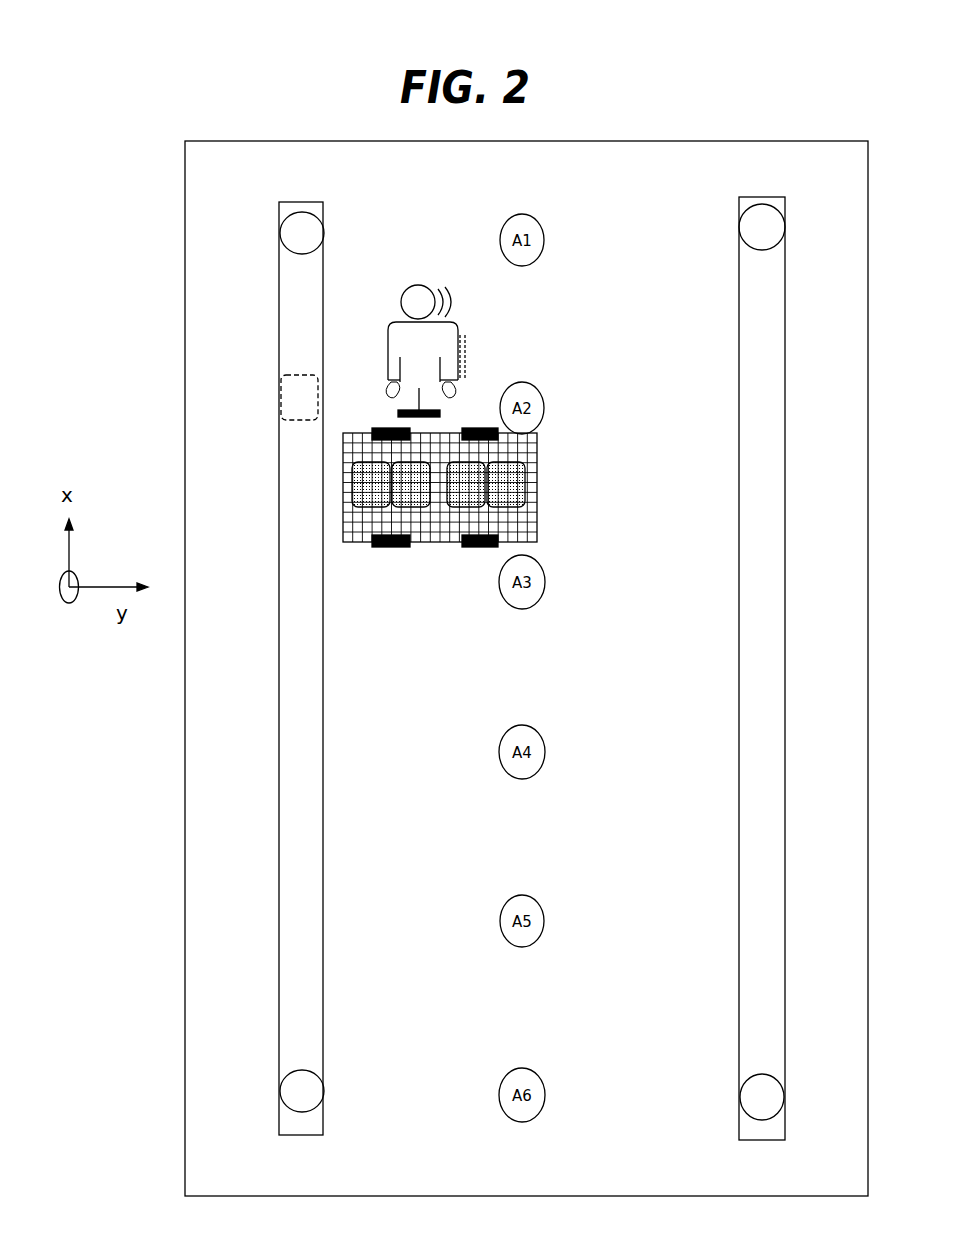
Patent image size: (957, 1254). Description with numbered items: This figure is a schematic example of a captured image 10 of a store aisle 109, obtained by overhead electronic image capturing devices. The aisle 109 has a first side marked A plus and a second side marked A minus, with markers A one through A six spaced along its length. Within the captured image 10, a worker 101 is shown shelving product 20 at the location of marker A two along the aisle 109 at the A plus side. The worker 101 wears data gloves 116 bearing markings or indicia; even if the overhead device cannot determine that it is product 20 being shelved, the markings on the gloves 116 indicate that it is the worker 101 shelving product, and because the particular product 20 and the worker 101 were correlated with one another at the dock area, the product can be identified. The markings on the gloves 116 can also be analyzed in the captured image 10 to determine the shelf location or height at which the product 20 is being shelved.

The captured image 10 is at (707, 172).
The aisle 109 is at (305, 283).
The data gloves 116 is at (450, 395).
The product 20 is at (403, 441).
The worker 101 is at (425, 351).